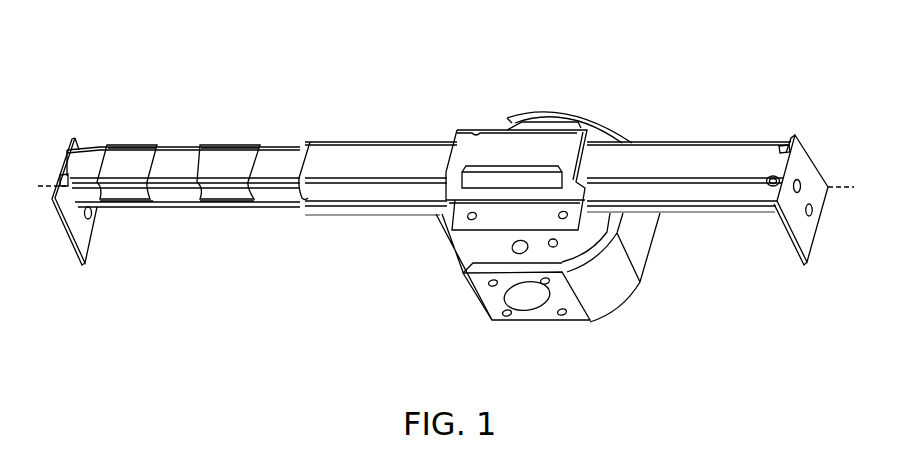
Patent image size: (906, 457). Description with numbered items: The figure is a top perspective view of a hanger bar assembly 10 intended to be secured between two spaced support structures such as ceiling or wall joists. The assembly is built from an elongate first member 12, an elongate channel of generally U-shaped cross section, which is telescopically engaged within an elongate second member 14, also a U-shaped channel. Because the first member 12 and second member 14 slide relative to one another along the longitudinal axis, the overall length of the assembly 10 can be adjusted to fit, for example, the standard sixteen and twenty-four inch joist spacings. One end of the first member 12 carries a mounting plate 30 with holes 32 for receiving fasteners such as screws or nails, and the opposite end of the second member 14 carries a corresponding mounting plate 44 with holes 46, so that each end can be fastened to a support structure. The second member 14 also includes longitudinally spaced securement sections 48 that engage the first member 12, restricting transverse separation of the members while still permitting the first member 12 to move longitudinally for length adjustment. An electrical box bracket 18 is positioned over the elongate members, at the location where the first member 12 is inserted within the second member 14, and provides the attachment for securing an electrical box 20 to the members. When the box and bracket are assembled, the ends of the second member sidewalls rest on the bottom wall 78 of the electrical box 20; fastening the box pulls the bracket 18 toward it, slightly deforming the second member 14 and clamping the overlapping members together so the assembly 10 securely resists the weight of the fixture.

The hanger bar assembly 10 is at (308, 104).
The first member 12 is at (91, 188).
The second member 14 is at (738, 155).
The electrical box bracket 18 is at (466, 147).
The electrical box 20 is at (468, 293).
The mounting plate 30 is at (55, 200).
The holes 32 is at (91, 196).
The mounting plate 44 is at (803, 238).
The holes 46 is at (800, 187).
The securement section 48 is at (168, 195).
The bottom wall 78 is at (470, 250).